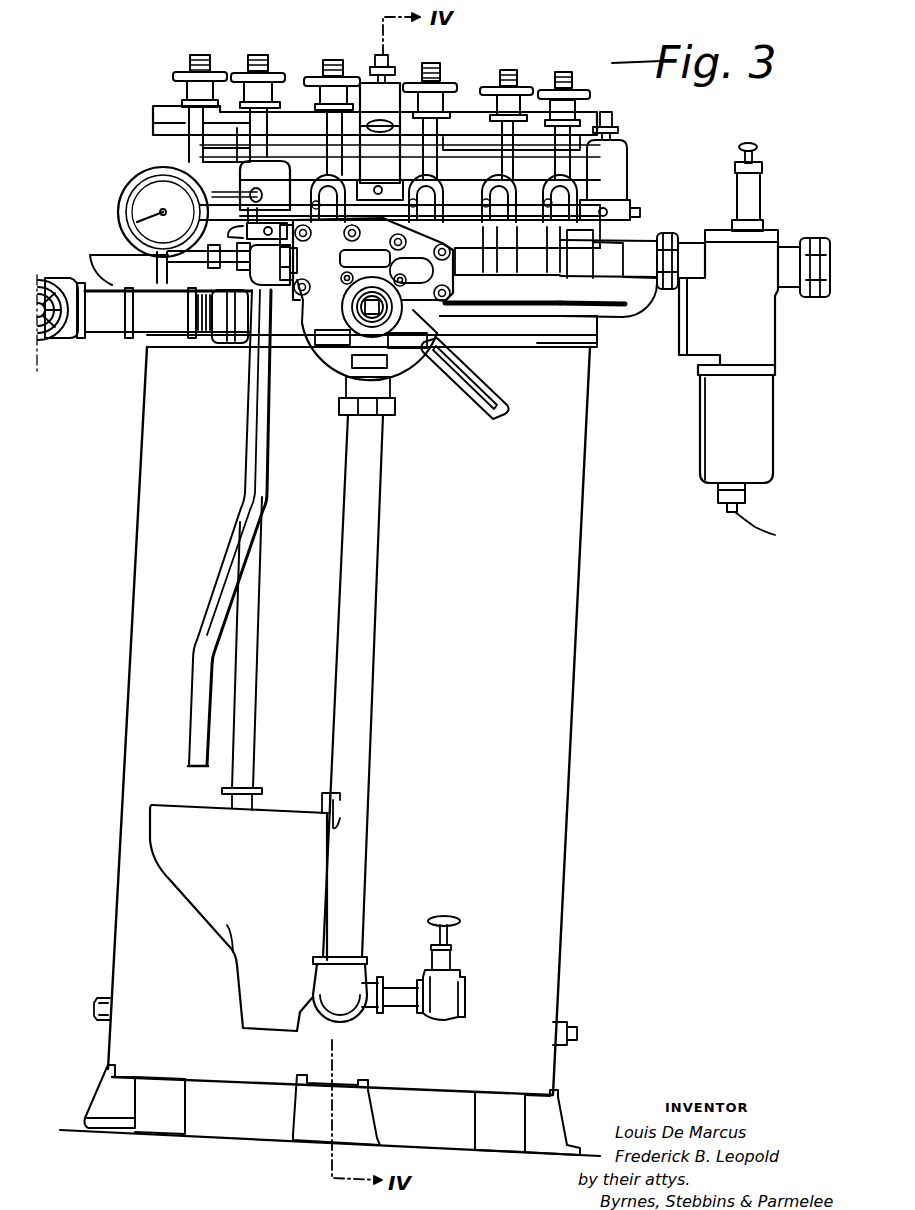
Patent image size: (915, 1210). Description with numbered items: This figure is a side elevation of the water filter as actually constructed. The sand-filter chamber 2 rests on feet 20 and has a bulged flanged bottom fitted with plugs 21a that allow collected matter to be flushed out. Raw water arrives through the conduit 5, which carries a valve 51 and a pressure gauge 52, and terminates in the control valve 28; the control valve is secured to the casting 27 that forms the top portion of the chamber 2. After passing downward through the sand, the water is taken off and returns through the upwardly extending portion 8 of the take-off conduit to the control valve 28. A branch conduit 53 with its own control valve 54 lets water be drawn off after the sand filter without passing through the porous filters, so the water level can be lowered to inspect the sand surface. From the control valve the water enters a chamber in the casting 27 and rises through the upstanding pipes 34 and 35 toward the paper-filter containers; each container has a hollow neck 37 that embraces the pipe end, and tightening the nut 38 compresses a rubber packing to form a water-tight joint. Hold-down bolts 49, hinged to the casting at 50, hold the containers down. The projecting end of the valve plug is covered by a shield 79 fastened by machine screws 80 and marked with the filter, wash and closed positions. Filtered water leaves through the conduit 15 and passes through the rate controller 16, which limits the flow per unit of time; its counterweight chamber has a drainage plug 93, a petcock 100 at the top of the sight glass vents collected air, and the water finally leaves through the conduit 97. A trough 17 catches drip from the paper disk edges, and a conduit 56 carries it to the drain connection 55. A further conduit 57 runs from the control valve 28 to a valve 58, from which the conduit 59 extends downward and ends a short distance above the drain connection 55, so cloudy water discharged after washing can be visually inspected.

The chamber 2 is at (352, 705).
The conduit 5 is at (100, 325).
The upwardly extending portion 8 is at (370, 682).
The conduit 15 is at (638, 253).
The rate controller 16 is at (757, 338).
The trough 17 is at (640, 288).
The feet 20 is at (293, 1118).
The plugs 21a is at (92, 1009).
The casting 27 is at (517, 297).
The control valve 28 is at (428, 278).
The upstanding pipe 34 is at (251, 200).
The upstanding pipe 35 is at (407, 225).
The hollow neck 37 is at (370, 160).
The nut 38 is at (400, 180).
The bolts 49 is at (190, 137).
The hinge point 50 is at (578, 197).
The valve 51 is at (50, 273).
The pressure gauge 52 is at (125, 192).
The branch conduit 53 is at (400, 997).
The control valve 54 is at (457, 915).
The drain connection 55 is at (240, 912).
The conduit 56 is at (253, 716).
The conduit 57 is at (302, 330).
The valve 58 is at (266, 268).
The conduit 59 is at (210, 622).
The shield 79 is at (400, 301).
The machine screws 80 is at (347, 283).
The plug 93 is at (767, 533).
The conduit 97 is at (802, 257).
The petcock 100 is at (750, 144).